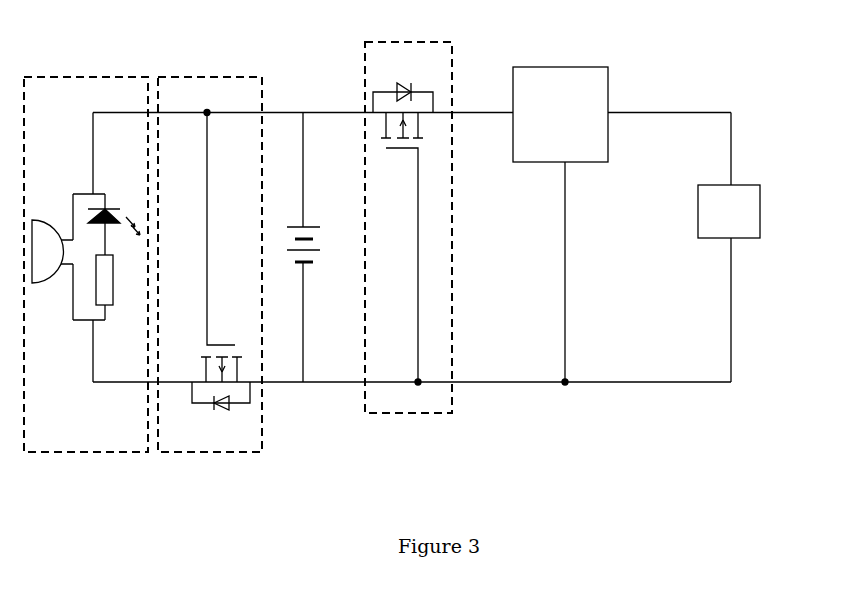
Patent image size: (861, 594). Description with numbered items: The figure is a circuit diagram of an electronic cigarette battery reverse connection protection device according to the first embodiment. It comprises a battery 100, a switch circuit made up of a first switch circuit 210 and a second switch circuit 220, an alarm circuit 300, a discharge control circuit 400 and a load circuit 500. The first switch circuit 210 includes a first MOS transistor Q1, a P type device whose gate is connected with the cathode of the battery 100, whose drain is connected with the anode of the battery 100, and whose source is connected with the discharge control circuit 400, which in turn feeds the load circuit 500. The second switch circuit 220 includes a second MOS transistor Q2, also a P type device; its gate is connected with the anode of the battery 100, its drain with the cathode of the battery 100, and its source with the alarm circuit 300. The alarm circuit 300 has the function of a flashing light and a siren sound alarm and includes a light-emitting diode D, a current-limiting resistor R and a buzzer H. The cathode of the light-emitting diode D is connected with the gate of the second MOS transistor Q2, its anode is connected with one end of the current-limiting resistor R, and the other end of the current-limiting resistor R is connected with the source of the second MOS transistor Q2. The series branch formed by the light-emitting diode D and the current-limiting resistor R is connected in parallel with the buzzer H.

The battery 100 is at (318, 220).
The first switch circuit 210 is at (408, 259).
The second switch circuit 220 is at (210, 289).
The alarm circuit 300 is at (86, 289).
The discharge control circuit 400 is at (608, 86).
The load circuit 500 is at (745, 240).
The buzzer H is at (52, 239).
The light-emitting diode D is at (114, 217).
The current-limiting resistor R is at (114, 287).
The first MOS transistor Q1 is at (403, 215).
The second MOS transistor Q2 is at (216, 276).